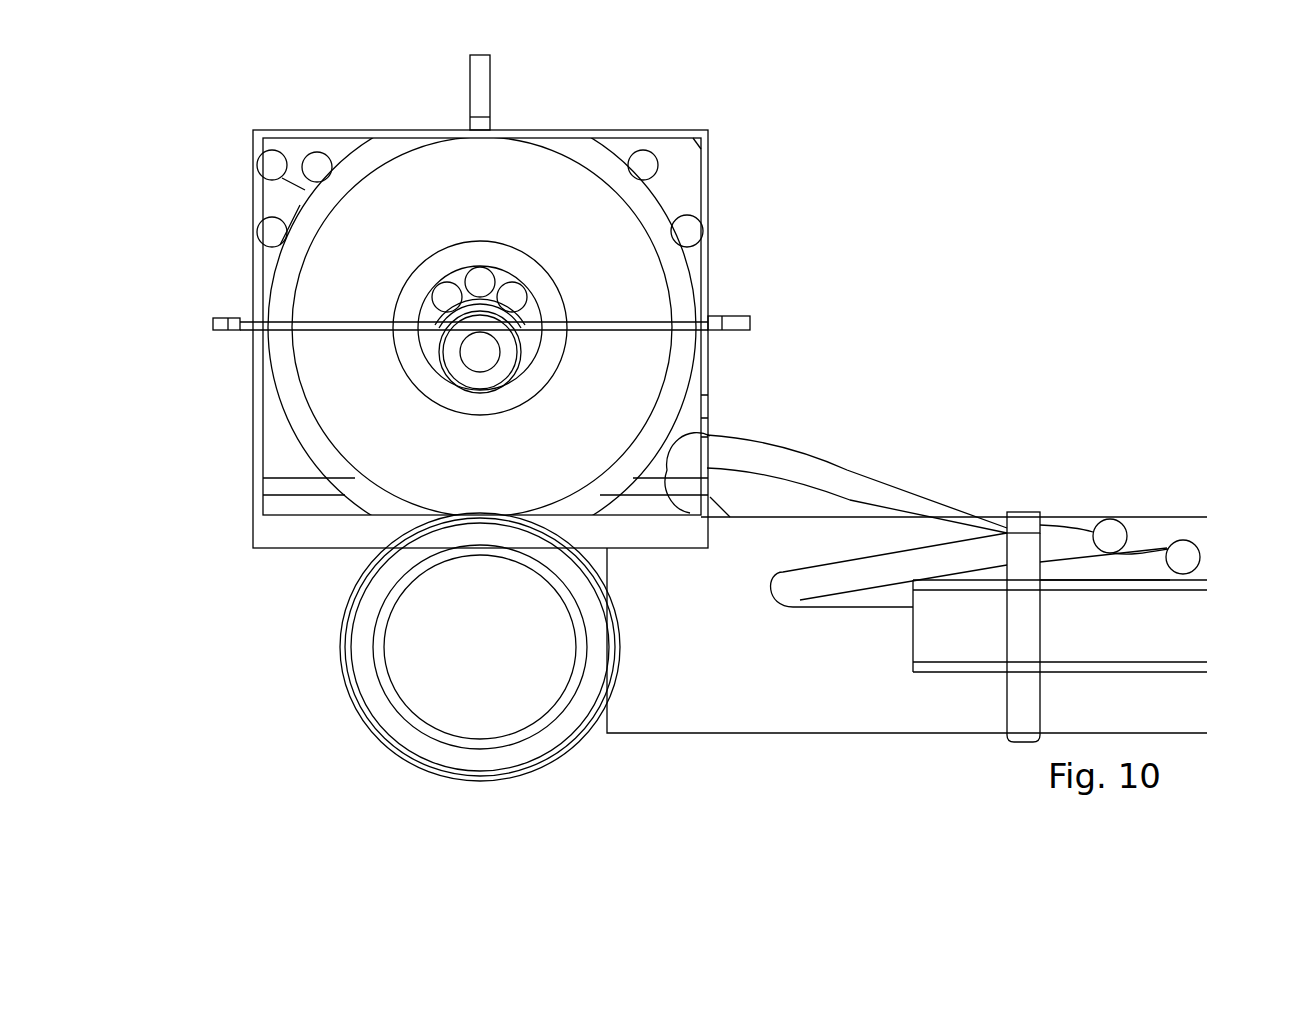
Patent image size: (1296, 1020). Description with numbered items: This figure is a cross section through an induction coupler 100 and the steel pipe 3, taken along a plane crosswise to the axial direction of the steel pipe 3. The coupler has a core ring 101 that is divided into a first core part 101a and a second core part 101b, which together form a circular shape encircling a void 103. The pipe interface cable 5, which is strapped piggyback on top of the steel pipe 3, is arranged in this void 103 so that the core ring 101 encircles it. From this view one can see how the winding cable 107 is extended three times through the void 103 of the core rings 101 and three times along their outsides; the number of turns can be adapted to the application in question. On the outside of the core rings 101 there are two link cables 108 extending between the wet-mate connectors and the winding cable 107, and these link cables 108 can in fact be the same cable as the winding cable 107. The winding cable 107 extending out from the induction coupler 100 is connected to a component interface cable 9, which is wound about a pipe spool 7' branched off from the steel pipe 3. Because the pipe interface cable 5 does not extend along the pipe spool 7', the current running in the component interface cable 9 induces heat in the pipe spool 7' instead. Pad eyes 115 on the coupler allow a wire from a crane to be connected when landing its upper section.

The induction coupler 100 is at (186, 174).
The core ring 101 is at (325, 283).
The first core part 101a is at (640, 288).
The second core part 101b is at (640, 360).
The void 103 is at (425, 343).
The pipe interface cable 5 is at (468, 352).
The winding cable 107 is at (317, 162).
The link cables 108 is at (643, 163).
The pad eyes 115 is at (490, 62).
The component interface cable 9 is at (842, 485).
The steel pipe 3 is at (335, 637).
The pipe spool 7' is at (907, 643).